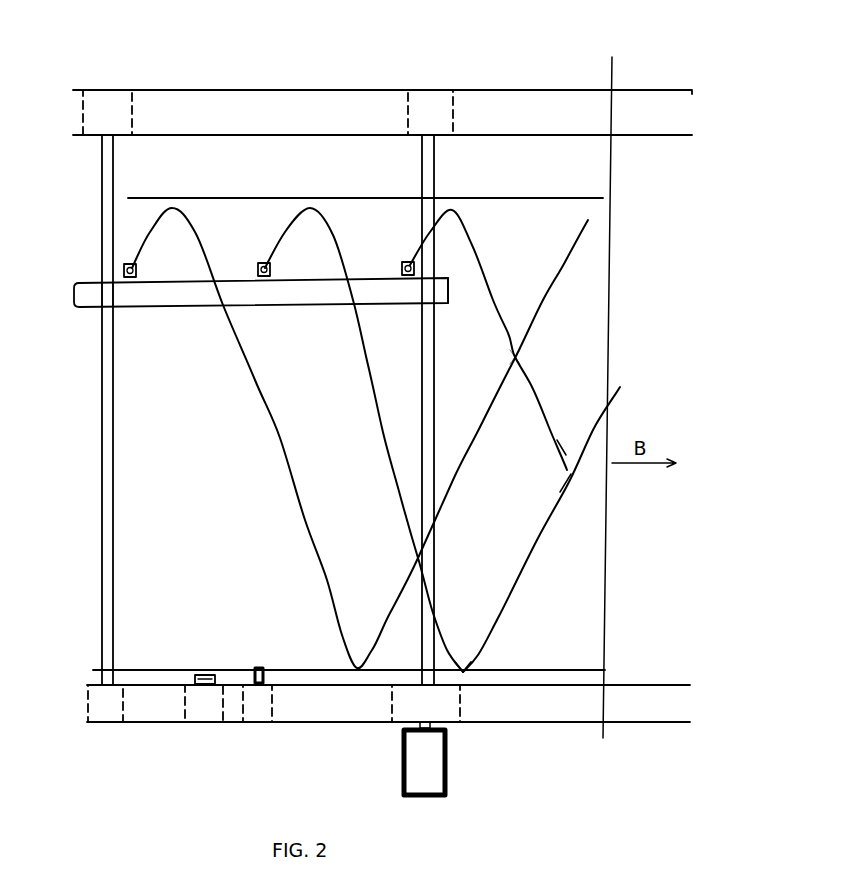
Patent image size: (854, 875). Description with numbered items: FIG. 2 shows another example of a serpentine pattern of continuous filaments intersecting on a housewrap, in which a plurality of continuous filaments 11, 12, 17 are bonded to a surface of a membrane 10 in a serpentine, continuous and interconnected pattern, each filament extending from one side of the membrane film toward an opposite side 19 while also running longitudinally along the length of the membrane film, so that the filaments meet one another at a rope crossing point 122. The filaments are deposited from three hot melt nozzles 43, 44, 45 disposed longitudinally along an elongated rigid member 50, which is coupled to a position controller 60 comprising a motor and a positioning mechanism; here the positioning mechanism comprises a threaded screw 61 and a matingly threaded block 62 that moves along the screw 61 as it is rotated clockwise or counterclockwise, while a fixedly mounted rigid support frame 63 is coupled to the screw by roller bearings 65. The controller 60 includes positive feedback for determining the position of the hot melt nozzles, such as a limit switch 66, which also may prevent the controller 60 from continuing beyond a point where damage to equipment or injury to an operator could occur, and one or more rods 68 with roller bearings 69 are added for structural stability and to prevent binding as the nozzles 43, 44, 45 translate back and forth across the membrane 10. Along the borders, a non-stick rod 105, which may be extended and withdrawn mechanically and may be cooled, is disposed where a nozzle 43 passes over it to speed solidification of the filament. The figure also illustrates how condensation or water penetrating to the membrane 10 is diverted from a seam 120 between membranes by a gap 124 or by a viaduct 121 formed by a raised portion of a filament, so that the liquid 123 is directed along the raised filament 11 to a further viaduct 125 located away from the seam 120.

The membrane 10 is at (245, 208).
The continuous filament 11 is at (280, 438).
The continuous filament 12 is at (382, 428).
The continuous filament 17 is at (472, 245).
The opposite side 19 is at (558, 670).
The hot melt nozzle 43 is at (127, 264).
The hot melt nozzle 44 is at (257, 267).
The hot melt nozzle 45 is at (402, 267).
The rigid member 50 is at (157, 303).
The position controller 60 is at (428, 762).
The threaded screw 61 is at (432, 410).
The threaded block 62 is at (445, 302).
The rigid support frame 63 is at (257, 103).
The roller bearings 65 is at (455, 87).
The limit switch 66 is at (207, 708).
The rod 68 is at (107, 498).
The roller bearing 69 is at (103, 303).
The rod 105 is at (273, 713).
The seam 120 is at (604, 713).
The viaduct 121 is at (568, 478).
The rope crossing point 122 is at (514, 357).
The liquid 123 is at (565, 445).
The gap 124 is at (518, 335).
The viaduct 125 is at (458, 680).